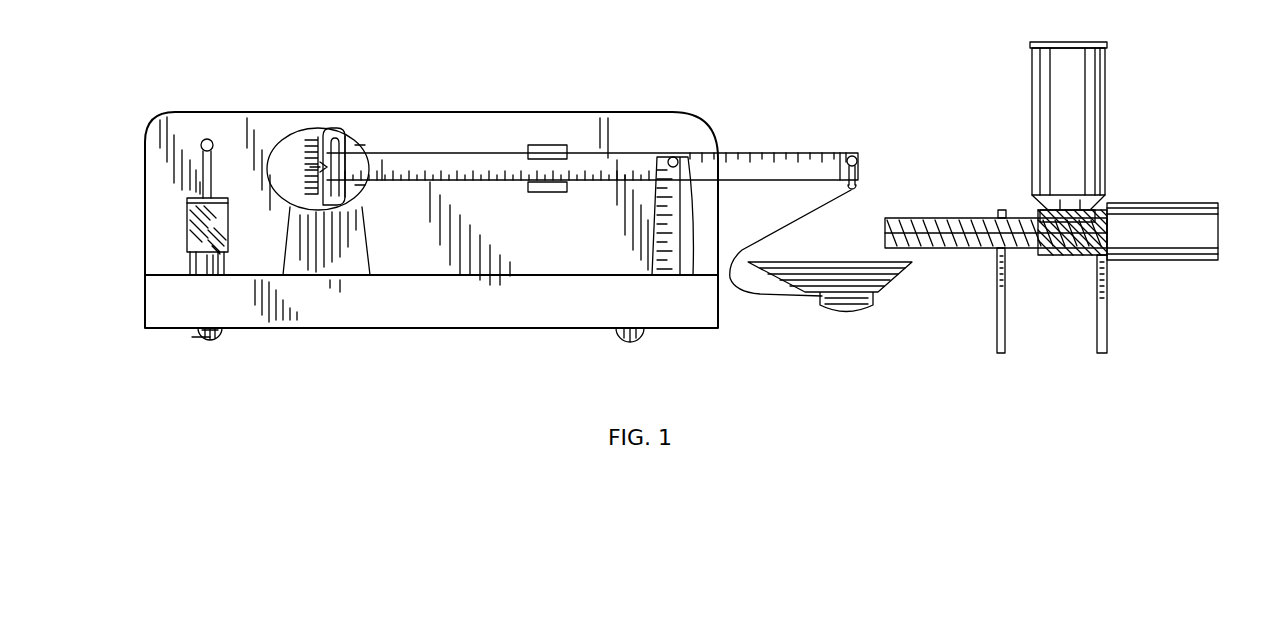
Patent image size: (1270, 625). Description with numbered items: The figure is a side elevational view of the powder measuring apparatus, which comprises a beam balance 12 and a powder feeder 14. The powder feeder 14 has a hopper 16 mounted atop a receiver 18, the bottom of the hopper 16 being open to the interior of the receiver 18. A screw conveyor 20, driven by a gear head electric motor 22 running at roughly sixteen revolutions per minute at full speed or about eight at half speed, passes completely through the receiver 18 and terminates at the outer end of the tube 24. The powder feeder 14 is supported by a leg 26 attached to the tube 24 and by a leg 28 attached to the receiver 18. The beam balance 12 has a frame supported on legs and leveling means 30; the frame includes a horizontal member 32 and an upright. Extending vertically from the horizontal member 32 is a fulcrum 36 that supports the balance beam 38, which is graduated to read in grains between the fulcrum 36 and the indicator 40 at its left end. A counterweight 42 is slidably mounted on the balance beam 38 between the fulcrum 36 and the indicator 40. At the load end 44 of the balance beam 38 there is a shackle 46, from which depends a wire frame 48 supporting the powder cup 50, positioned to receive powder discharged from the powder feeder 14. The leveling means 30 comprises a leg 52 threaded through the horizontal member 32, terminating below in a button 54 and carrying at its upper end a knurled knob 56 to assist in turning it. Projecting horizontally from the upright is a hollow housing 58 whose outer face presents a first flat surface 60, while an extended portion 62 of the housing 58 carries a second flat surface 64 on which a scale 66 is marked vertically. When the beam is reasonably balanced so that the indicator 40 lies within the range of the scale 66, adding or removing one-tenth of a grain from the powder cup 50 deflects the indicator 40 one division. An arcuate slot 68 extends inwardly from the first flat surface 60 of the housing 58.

The beam balance 12 is at (422, 107).
The powder feeder 14 is at (1110, 171).
The hopper 16 is at (1104, 108).
The receiver 18 is at (1064, 253).
The screw conveyor 20 is at (884, 232).
The gear head electric motor 22 is at (1200, 262).
The tube 24 is at (958, 218).
The leg 26 is at (1005, 333).
The leg 28 is at (1107, 322).
The leveling means 30 is at (189, 344).
The horizontal member 32 is at (146, 304).
The fulcrum 36 is at (656, 240).
The balance beam 38 is at (613, 153).
The indicator 40 is at (335, 167).
The counterweight 42 is at (530, 145).
The load end 44 is at (834, 154).
The shackle 46 is at (858, 160).
The wire frame 48 is at (786, 218).
The powder cup 50 is at (905, 275).
The leg 52 is at (192, 262).
The button 54 is at (220, 340).
The knurled knob 56 is at (230, 228).
The hollow housing 58 is at (356, 204).
The first flat surface 60 is at (358, 186).
The extended portion 62 is at (313, 130).
The second flat surface 64 is at (276, 152).
The scale 66 is at (305, 176).
The arcuate slot 68 is at (340, 138).